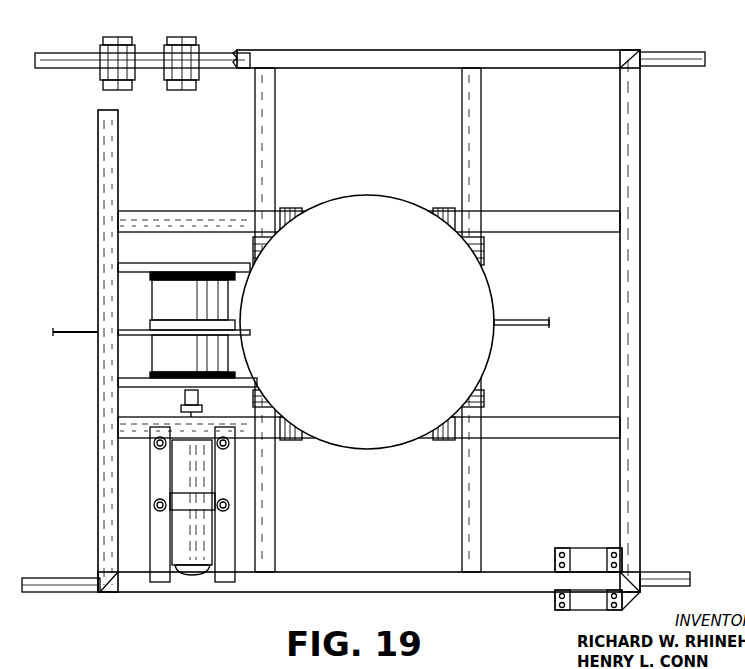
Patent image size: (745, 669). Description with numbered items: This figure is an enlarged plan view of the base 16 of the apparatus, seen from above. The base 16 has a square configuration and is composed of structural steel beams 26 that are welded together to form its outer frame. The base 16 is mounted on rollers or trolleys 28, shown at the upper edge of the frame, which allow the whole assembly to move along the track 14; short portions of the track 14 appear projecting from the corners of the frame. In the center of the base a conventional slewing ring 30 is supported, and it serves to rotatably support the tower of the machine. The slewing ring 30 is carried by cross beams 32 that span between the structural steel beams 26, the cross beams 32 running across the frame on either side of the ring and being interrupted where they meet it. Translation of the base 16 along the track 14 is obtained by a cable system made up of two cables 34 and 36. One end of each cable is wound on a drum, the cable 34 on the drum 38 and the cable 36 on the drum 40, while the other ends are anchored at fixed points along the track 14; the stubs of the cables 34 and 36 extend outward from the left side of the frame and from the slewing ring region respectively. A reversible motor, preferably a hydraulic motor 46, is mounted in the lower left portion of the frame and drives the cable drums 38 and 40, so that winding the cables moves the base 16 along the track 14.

The track 14 is at (669, 53).
The base 16 is at (644, 204).
The structural steel beams 26 is at (373, 57).
The rollers or trolleys 28 is at (192, 46).
The slewing ring 30 is at (491, 293).
The cross beams 32 is at (276, 162).
The cable 34 is at (85, 332).
The cable 36 is at (529, 326).
The drum 38 is at (160, 350).
The drum 40 is at (160, 298).
The hydraulic motor 46 is at (180, 462).